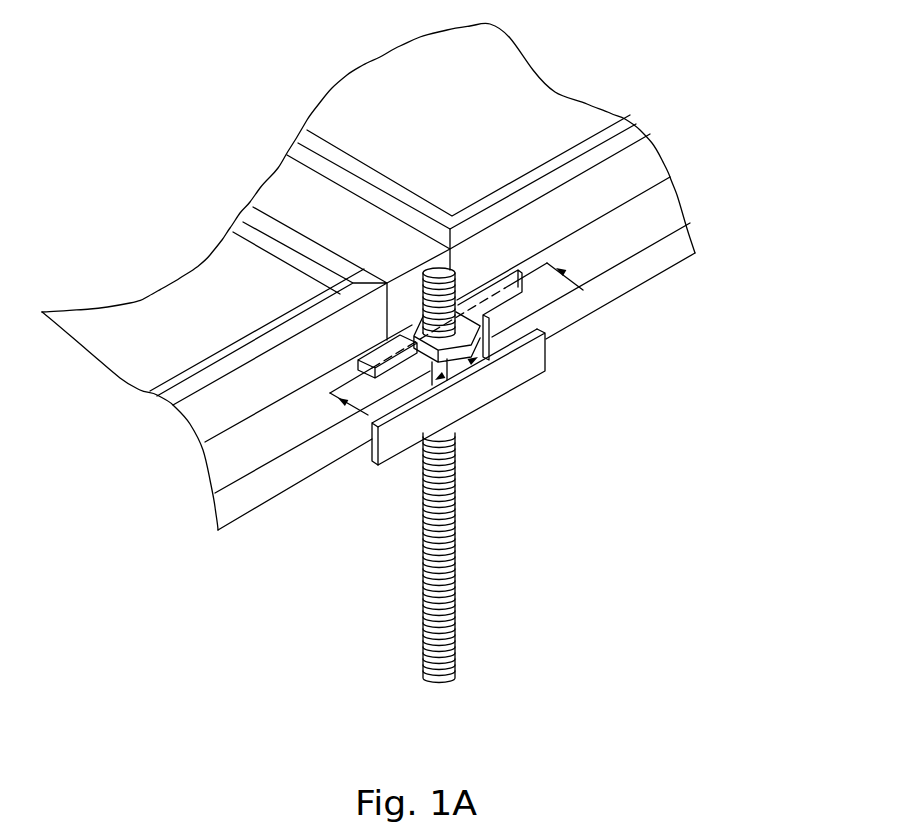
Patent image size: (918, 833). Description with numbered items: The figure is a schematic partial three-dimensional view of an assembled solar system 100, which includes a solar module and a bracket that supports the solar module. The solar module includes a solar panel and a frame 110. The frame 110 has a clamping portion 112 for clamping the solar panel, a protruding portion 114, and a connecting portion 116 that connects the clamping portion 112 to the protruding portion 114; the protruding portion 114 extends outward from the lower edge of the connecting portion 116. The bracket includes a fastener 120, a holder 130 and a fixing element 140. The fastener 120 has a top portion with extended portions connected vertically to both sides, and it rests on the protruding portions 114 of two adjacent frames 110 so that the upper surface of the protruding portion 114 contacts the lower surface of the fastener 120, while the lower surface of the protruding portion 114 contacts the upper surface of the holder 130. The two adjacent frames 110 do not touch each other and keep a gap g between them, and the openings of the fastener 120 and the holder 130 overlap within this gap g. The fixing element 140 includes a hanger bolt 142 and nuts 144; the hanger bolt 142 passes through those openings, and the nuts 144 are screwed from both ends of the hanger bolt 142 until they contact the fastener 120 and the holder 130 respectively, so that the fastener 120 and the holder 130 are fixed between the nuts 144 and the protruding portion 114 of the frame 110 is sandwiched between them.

The solar system 100 is at (153, 41).
The frame 110 is at (413, 275).
The clamping portion 112 is at (588, 157).
The protruding portion 114 is at (670, 202).
The connecting portion 116 is at (648, 158).
The fastener 120 is at (524, 309).
The holder 130 is at (368, 462).
The fixing element 140 is at (526, 475).
The hanger bolt 142 is at (447, 531).
The nuts 144 is at (546, 369).
The gap g is at (457, 366).